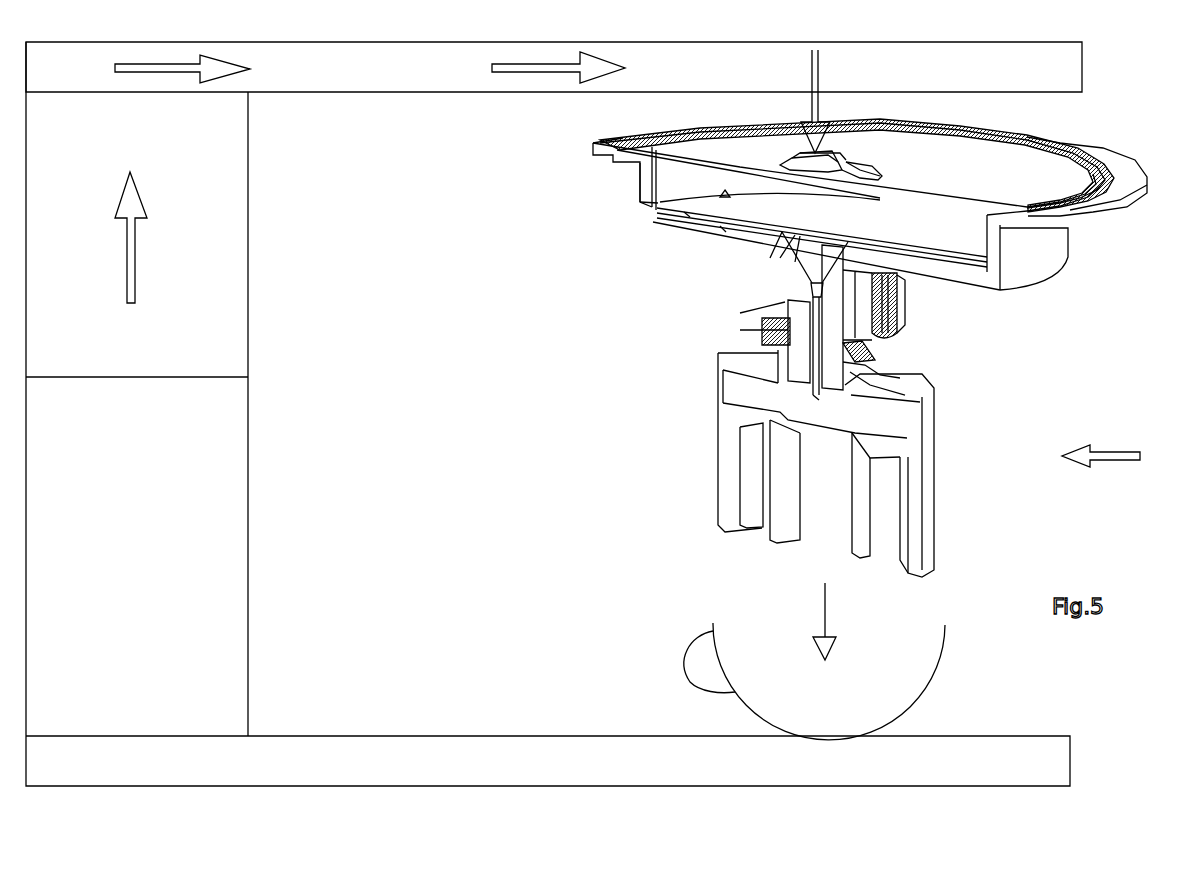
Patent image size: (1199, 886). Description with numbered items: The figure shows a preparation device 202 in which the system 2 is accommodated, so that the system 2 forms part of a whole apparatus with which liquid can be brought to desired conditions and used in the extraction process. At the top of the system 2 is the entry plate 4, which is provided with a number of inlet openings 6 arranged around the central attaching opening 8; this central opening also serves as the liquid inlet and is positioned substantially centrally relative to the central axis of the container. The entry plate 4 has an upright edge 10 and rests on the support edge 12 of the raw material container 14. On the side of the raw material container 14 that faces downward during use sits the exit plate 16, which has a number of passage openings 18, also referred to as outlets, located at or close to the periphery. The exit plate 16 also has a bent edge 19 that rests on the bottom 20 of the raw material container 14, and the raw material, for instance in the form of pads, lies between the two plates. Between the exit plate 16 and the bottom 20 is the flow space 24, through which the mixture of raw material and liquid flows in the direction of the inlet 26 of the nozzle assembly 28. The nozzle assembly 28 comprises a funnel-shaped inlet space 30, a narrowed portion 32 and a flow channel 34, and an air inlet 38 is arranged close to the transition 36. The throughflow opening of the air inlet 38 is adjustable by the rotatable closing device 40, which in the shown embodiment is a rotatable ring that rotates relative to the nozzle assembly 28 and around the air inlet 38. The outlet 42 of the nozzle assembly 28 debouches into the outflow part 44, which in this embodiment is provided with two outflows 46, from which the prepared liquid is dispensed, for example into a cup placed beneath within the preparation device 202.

The system 2 is at (667, 178).
The entry plate 4 is at (957, 172).
The inlet openings 6 is at (866, 172).
The central attaching opening 8 is at (818, 168).
The upright edge 10 is at (627, 138).
The support edge 12 is at (618, 142).
The raw material container 14 is at (643, 202).
The exit plate 16 is at (925, 228).
The passage openings 18 is at (725, 195).
The bent edge 19 is at (658, 204).
The bottom 20 is at (723, 230).
The flow space 24 is at (687, 217).
The inlet 26 is at (795, 240).
The nozzle assembly 28 is at (800, 330).
The funnel-shaped inlet space 30 is at (815, 286).
The narrowed portion 32 is at (872, 300).
The flow channel 34 is at (872, 343).
The transition 36 is at (890, 323).
The air inlet 38 is at (785, 308).
The closing device 40 is at (853, 305).
The outlet 42 is at (815, 385).
The outflow part 44 is at (925, 412).
The outflows 46 is at (872, 352).
The preparation device 202 is at (1130, 455).